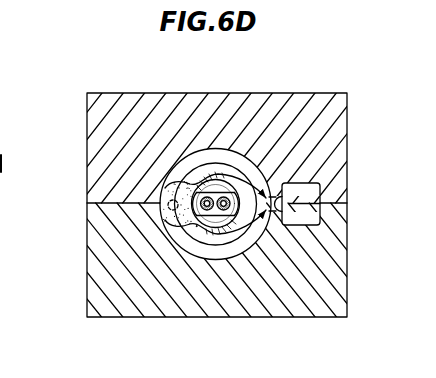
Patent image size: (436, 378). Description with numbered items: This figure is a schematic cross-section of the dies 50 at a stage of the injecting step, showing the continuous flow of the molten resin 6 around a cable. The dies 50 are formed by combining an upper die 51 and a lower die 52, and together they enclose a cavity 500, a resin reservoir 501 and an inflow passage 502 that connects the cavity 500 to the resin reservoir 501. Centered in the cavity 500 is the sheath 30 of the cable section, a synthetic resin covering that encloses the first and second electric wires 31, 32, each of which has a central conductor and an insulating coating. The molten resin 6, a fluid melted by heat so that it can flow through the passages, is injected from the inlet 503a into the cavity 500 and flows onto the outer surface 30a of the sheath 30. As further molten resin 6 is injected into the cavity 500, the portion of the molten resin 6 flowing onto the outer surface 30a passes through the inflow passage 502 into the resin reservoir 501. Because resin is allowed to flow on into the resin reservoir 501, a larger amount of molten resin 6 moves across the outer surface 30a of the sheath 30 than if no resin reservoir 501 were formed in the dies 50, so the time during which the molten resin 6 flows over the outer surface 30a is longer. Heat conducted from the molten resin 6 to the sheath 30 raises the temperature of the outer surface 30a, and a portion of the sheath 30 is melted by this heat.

The dies 50 is at (216, 173).
The upper die 51 is at (347, 126).
The lower die 52 is at (347, 266).
The cavity 500 is at (244, 157).
The resin reservoir 501 is at (322, 191).
The inflow passage 502 is at (277, 192).
The inlet 503a is at (161, 209).
The sheath 30 is at (204, 191).
The outer surface 30a is at (212, 228).
The first electric wire 31 is at (206, 199).
The second electric wire 32 is at (222, 198).
The molten resin 6 is at (201, 233).